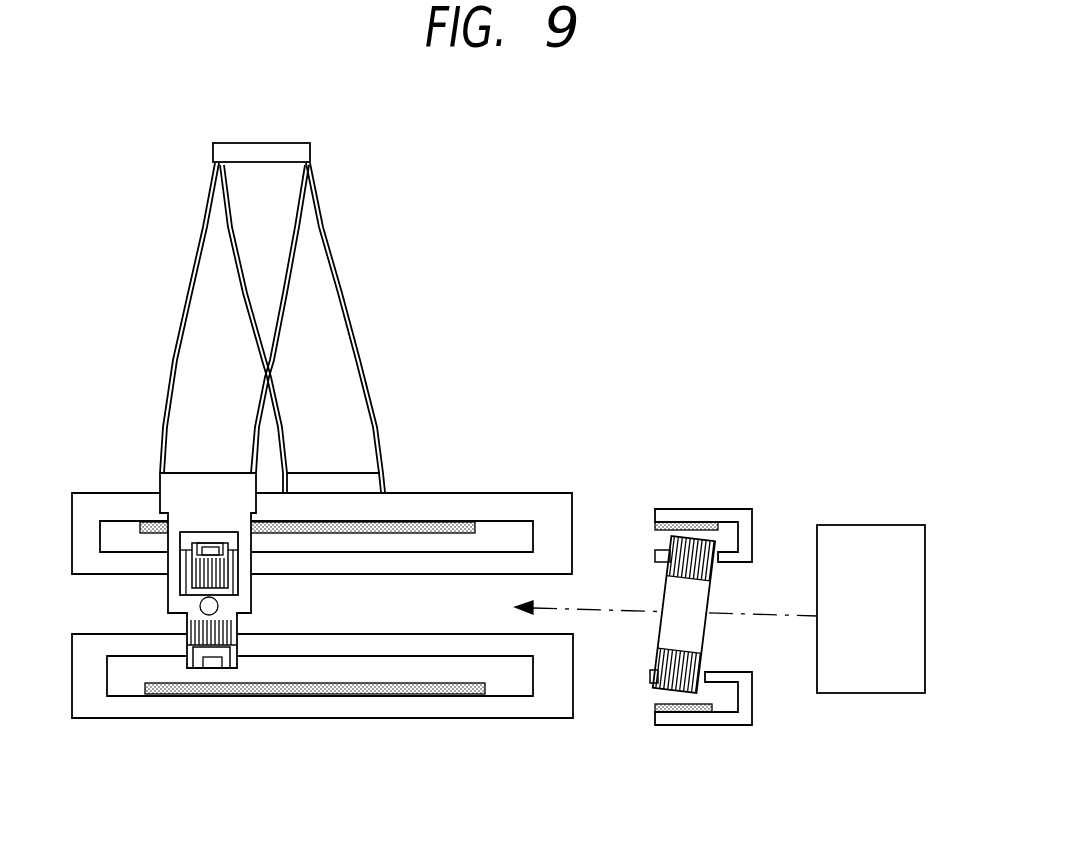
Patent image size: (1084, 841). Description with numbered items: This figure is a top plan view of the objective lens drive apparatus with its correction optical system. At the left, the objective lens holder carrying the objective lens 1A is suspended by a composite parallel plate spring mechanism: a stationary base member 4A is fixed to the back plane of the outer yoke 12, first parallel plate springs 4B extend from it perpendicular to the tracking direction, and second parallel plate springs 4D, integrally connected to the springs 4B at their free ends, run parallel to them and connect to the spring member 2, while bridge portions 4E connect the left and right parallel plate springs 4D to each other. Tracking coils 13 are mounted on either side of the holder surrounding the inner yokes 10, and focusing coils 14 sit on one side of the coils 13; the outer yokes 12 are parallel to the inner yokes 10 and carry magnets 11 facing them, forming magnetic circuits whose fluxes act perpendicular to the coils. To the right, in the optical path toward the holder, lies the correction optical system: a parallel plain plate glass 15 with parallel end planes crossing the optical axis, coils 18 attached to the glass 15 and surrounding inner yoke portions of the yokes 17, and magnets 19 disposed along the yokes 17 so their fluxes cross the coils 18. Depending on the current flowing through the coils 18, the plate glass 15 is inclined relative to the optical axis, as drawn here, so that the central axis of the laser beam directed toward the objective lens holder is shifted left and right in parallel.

The objective lens 1A is at (203, 613).
The spring member 2 is at (203, 480).
The stationary base member 4A is at (338, 480).
The first parallel plate spring 4B is at (237, 285).
The second parallel plate spring 4D is at (172, 358).
The bridge portion 4E is at (265, 148).
The inner yoke 10 is at (450, 560).
The magnet 11 is at (455, 523).
The outer yoke 12 is at (513, 507).
The tracking coil 13 is at (227, 633).
The focusing coil 14 is at (222, 667).
The parallel plain plate glass 15 is at (672, 592).
The yoke 17 is at (742, 510).
The coil 18 is at (657, 538).
The magnet 19 is at (678, 520).